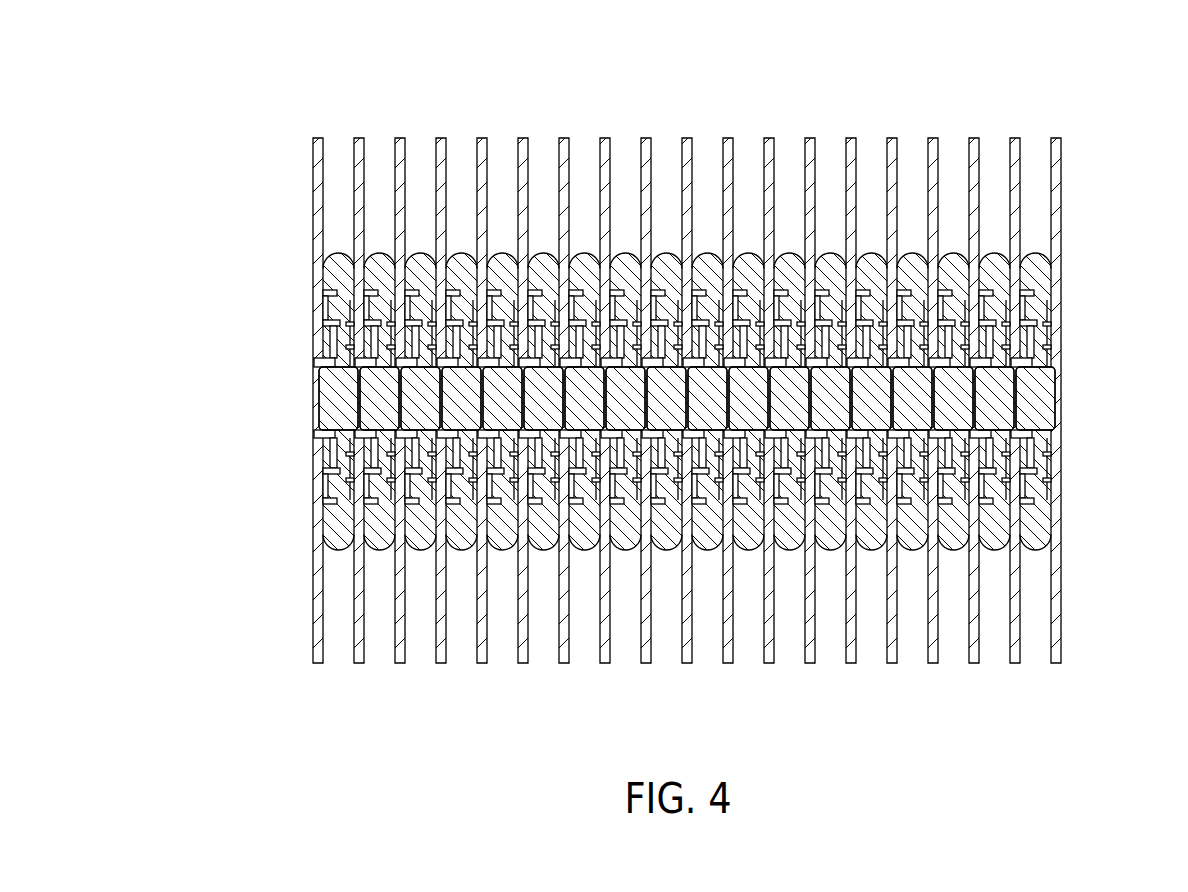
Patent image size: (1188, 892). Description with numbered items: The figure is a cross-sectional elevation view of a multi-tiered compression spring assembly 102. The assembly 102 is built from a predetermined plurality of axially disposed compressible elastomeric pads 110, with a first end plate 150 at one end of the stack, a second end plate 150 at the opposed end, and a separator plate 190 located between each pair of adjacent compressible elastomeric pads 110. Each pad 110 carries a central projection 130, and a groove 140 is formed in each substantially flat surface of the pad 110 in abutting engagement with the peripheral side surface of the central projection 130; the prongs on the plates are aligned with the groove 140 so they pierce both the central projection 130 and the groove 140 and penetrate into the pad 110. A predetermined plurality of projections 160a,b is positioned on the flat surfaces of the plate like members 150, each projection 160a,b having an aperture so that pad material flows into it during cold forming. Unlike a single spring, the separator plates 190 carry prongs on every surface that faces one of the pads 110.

The multi-tiered compression spring assembly 102 is at (962, 80).
The compressible elastomeric pad 110 is at (708, 233).
The central projection 130 is at (1003, 386).
The groove 140 is at (1055, 436).
The end plate 150 is at (671, 440).
The projections 160a,b is at (1005, 520).
The separator plate 190 is at (525, 667).